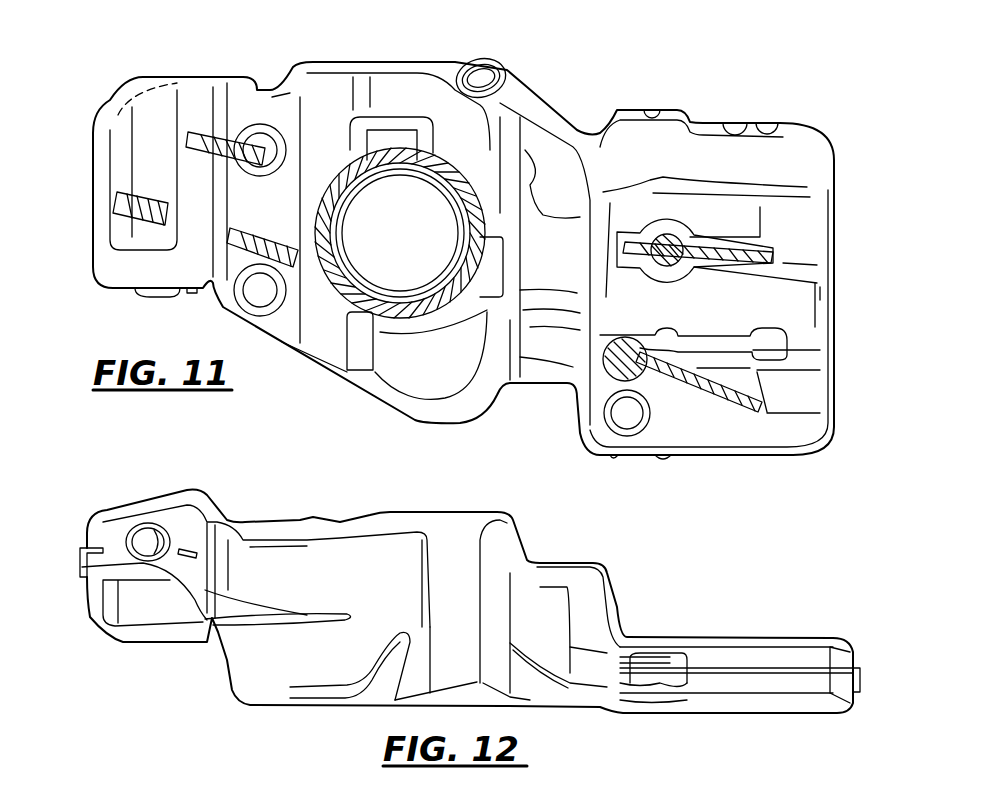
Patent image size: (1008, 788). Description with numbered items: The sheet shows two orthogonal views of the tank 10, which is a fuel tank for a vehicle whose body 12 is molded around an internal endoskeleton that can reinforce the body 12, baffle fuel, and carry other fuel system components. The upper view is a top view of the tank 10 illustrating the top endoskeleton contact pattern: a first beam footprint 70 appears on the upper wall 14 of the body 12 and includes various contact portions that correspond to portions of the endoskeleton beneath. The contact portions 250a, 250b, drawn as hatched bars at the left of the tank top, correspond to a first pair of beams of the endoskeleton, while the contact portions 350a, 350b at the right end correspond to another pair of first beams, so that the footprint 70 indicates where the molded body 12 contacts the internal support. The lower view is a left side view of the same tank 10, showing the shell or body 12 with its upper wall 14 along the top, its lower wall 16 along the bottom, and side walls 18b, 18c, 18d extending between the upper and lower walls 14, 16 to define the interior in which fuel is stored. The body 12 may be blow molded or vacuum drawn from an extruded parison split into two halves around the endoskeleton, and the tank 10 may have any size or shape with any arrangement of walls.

In FIG. 11, the tank 10 is at (122, 33).
In FIG. 12, the tank 10 is at (130, 463).
In FIG. 11, the body 12 is at (690, 120).
In FIG. 12, the body 12 is at (208, 679).
In FIG. 12, the upper wall 14 is at (197, 490).
In FIG. 12, the lower wall 16 is at (170, 642).
In FIG. 12, the side wall 18b is at (361, 593).
In FIG. 12, the side wall 18c is at (853, 658).
In FIG. 12, the side wall 18d is at (82, 563).
In FIG. 11, the first beam footprint 70 is at (338, 143).
In FIG. 11, the contact portion 250a is at (197, 133).
In FIG. 11, the contact portion 250b is at (150, 212).
In FIG. 11, the contact portion 350a is at (763, 258).
In FIG. 11, the contact portion 350b is at (750, 408).